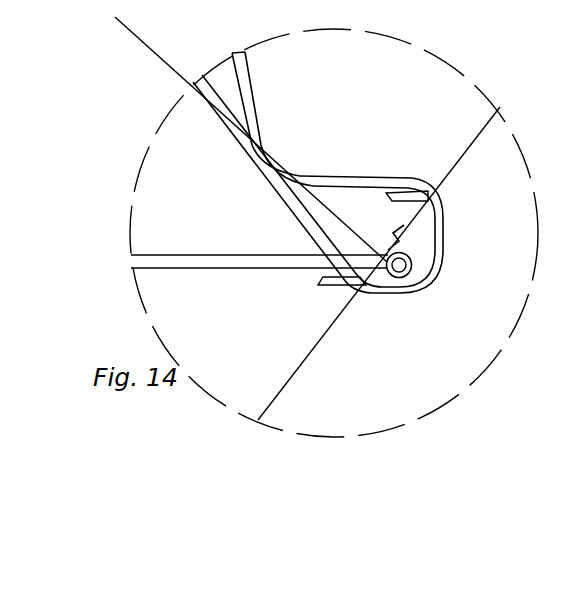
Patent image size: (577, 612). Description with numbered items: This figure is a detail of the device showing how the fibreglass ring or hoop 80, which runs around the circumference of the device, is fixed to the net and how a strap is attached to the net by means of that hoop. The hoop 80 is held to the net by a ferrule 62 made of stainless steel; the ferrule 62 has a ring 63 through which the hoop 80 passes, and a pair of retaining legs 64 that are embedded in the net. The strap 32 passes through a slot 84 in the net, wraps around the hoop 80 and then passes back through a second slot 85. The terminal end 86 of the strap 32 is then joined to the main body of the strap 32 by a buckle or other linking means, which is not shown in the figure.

The strap 32 is at (305, 176).
The ferrule 62 is at (382, 278).
The ring 63 is at (413, 265).
The retaining legs 64 is at (406, 227).
The fibreglass ring 80 is at (186, 262).
The slot 84 is at (328, 288).
The second slot 85 is at (405, 190).
The terminal end 86 is at (247, 62).